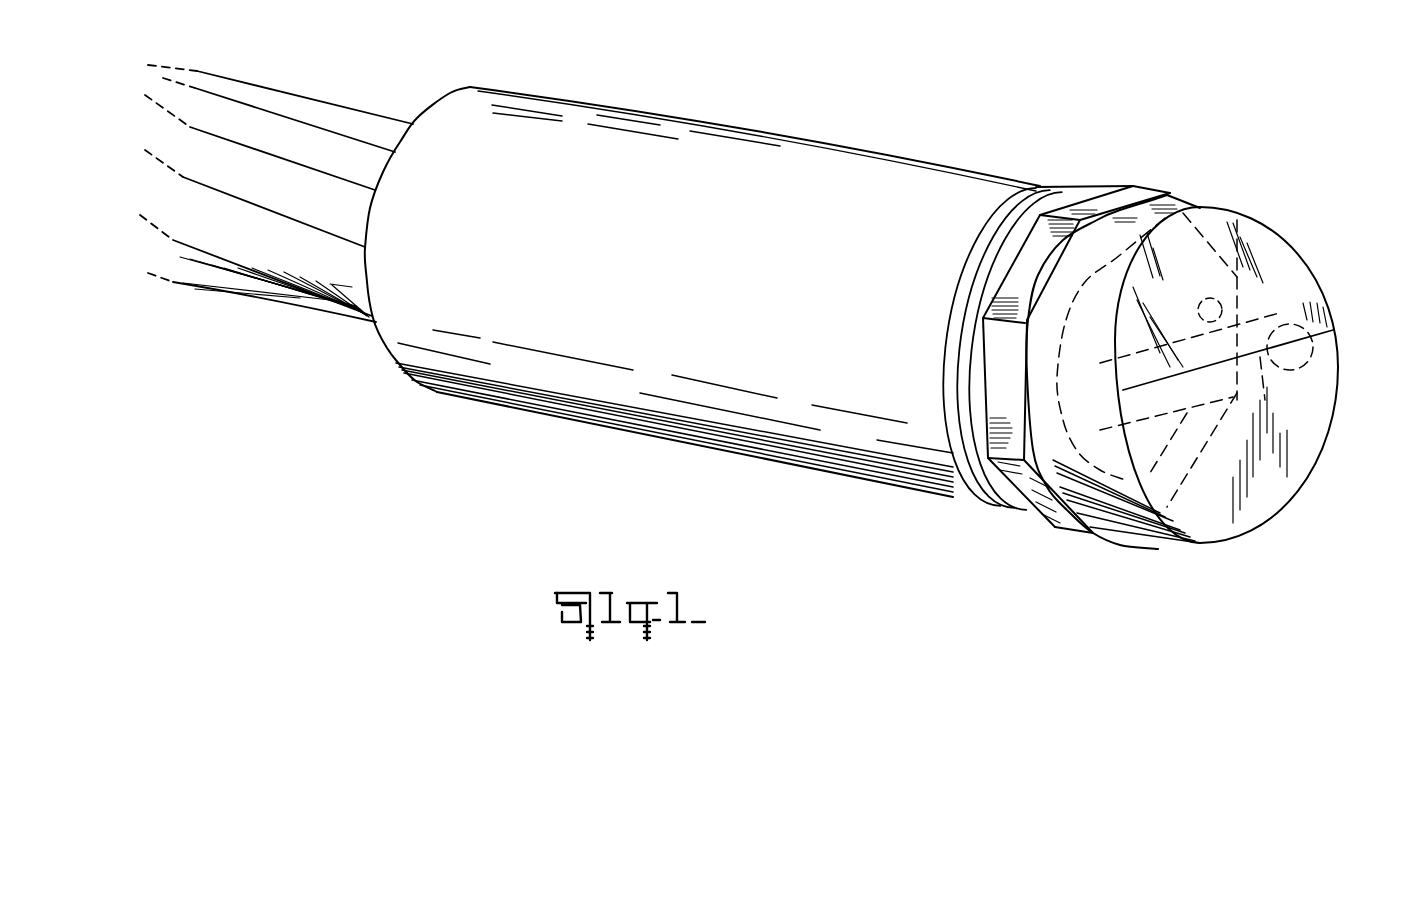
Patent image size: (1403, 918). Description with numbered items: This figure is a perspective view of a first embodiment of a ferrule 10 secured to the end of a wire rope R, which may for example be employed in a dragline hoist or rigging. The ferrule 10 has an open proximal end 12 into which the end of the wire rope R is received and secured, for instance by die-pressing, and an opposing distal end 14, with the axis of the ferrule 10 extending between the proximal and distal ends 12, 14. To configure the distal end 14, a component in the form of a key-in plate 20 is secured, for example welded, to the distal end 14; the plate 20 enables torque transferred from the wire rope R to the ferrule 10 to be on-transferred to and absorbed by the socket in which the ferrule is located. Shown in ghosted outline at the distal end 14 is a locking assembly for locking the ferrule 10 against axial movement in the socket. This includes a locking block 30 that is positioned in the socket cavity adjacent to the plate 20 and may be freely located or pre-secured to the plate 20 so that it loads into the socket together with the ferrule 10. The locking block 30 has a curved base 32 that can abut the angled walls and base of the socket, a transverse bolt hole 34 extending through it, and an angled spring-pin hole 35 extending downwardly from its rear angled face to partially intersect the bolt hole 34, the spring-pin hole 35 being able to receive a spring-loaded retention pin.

The ferrule 10 is at (579, 441).
The open proximal end 12 is at (496, 79).
The distal end 14 is at (997, 505).
The key-in plate 20 is at (1147, 197).
The locking block 30 is at (1257, 221).
The curved base 32 is at (1167, 538).
The transverse bolt hole 34 is at (1297, 440).
The angled spring-pin hole 35 is at (1237, 275).
The wire rope R is at (299, 118).